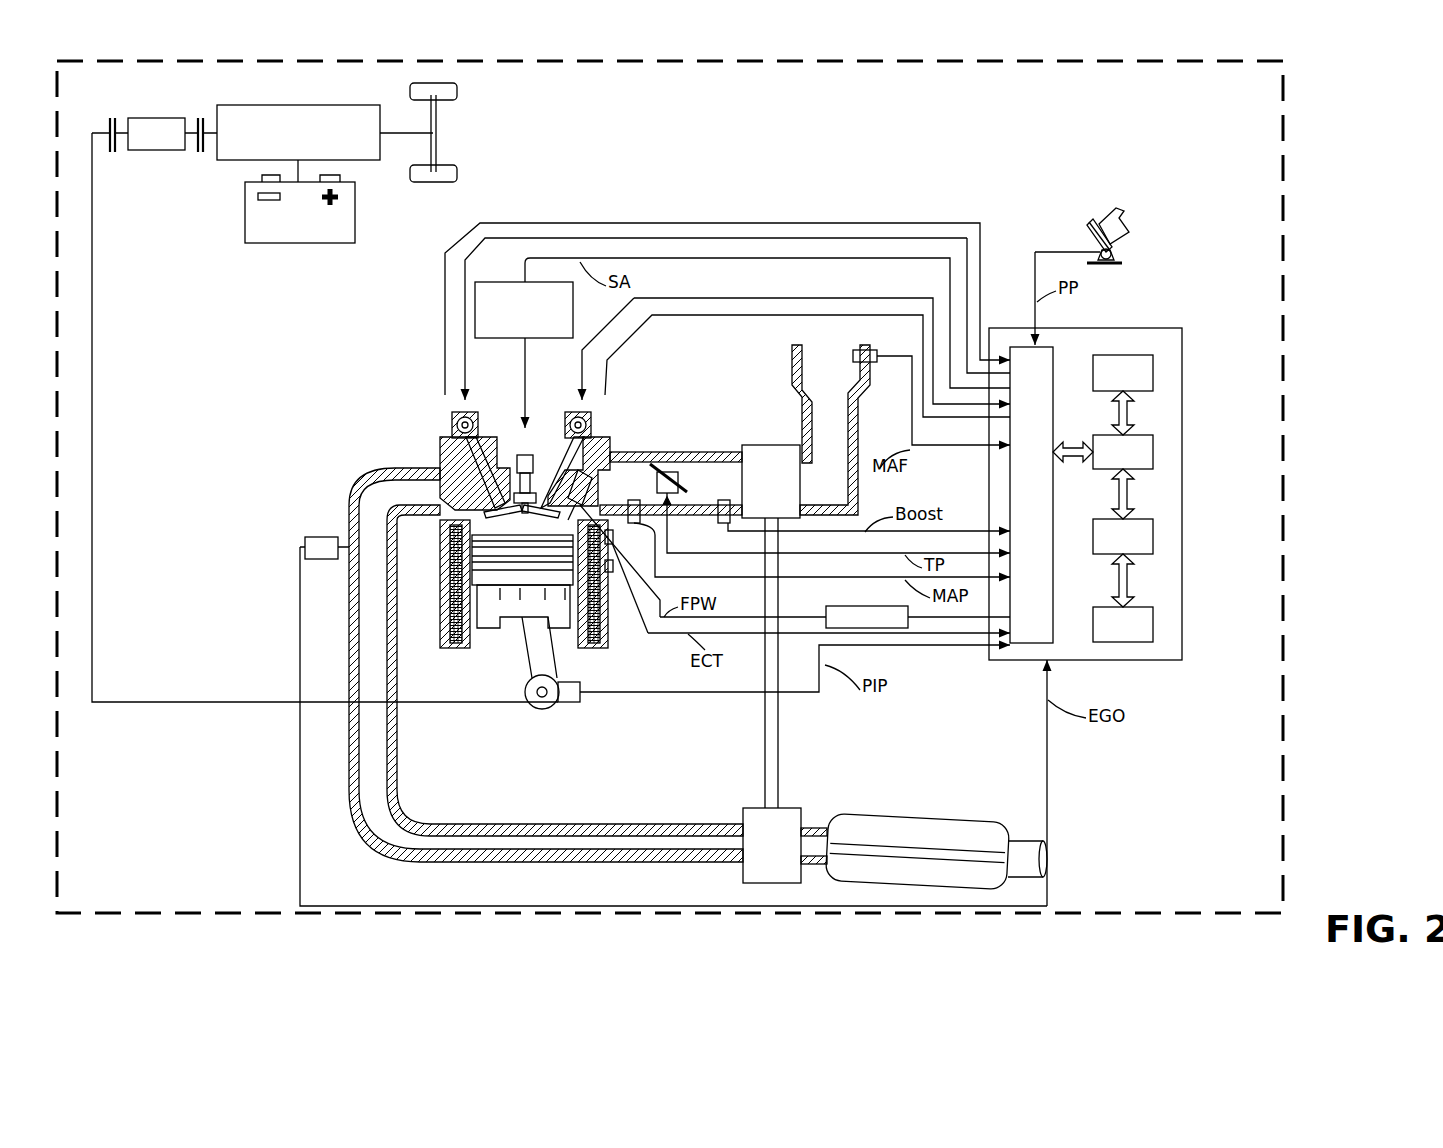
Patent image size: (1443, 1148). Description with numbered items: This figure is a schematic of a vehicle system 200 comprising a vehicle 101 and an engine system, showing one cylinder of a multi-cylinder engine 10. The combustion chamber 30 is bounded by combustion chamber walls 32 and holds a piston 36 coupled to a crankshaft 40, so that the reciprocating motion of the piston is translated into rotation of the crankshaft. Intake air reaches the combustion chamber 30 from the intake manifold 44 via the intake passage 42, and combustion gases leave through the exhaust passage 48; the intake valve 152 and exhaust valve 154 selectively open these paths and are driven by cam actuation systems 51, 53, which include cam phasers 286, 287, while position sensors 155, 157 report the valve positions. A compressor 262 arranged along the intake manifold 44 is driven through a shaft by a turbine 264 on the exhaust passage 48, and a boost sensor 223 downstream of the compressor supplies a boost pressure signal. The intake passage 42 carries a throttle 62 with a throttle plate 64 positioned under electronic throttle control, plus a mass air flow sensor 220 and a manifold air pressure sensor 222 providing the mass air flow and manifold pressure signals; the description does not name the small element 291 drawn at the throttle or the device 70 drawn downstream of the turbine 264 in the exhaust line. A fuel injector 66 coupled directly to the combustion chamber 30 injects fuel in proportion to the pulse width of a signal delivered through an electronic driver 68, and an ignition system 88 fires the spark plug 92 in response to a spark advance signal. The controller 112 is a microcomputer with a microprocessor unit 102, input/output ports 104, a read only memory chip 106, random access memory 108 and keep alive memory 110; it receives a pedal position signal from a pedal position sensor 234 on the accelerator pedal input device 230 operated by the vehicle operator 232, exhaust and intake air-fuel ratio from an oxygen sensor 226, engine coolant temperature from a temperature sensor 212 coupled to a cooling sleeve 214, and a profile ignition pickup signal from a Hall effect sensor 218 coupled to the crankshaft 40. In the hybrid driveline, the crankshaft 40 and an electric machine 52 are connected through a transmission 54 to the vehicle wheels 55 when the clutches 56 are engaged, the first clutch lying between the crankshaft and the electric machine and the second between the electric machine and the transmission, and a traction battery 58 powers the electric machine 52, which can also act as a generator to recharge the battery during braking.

The vehicle system 200 is at (1350, 108).
The vehicle 101 is at (1290, 540).
The clutches 56 is at (108, 122).
The electric machine 52 is at (155, 150).
The transmission 54 is at (355, 160).
The vehicle wheels 55 is at (440, 183).
The traction battery 58 is at (355, 218).
The ignition system 88 is at (488, 282).
The controller 112 is at (1180, 335).
The input/output ports 104 is at (1055, 352).
The read only memory chip 106 is at (1155, 372).
The microprocessor unit 102 is at (1155, 452).
The random access memory 108 is at (1155, 537).
The keep alive memory 110 is at (1155, 625).
The input device 230 is at (1088, 232).
The vehicle operator 232 is at (1128, 222).
The pedal position sensor 234 is at (1115, 253).
The intake passage 42 is at (831, 430).
The mass air flow sensor 220 is at (868, 350).
The compressor 262 is at (770, 445).
The turbine 264 is at (740, 862).
The emission control device 70 is at (962, 826).
The intake manifold 44 is at (671, 483).
The throttle plate 64 is at (662, 470).
The throttle 62 is at (672, 462).
The throttle actuator 291 is at (658, 500).
The boost sensor 223 is at (720, 523).
The manifold air pressure sensor 222 is at (640, 540).
The electronic driver 68 is at (855, 606).
The engine 10 is at (386, 398).
The exhaust valve 154 is at (445, 460).
The combustion chamber 30 is at (524, 581).
The combustion chamber walls 32 is at (465, 648).
The piston 36 is at (558, 640).
The crankshaft 40 is at (555, 710).
The Hall effect sensor 218 is at (580, 700).
The position sensor 157 is at (452, 425).
The cam actuation system 53 is at (474, 410).
The cam phaser 287 is at (455, 402).
The position sensor 155 is at (593, 430).
The cam actuation system 51 is at (566, 410).
The cam phaser 286 is at (600, 412).
The spark plug 92 is at (518, 456).
The intake valve 152 is at (533, 470).
The fuel injector 66 is at (614, 543).
The cooling sleeve 214 is at (603, 620).
The temperature sensor 212 is at (613, 575).
The exhaust passage 48 is at (546, 665).
The oxygen sensor 226 is at (303, 540).